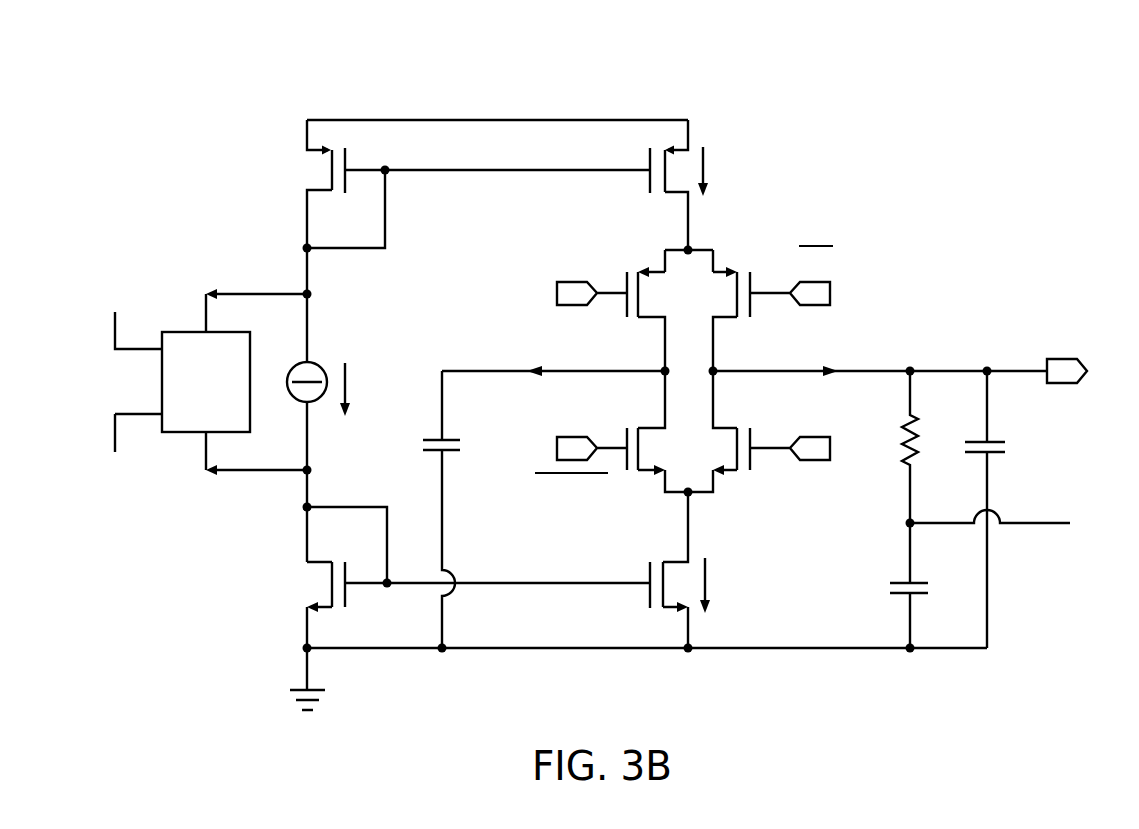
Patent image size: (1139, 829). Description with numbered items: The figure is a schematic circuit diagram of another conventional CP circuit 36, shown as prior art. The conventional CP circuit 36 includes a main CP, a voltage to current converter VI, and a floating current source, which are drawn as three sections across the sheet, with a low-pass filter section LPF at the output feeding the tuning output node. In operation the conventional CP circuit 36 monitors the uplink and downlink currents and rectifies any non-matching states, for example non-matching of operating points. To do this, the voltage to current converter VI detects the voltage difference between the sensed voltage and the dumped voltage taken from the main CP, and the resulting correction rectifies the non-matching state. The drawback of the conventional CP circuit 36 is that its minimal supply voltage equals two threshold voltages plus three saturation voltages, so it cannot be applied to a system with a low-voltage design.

The conventional CP circuit 36 is at (998, 129).
The voltage to current converter VI is at (276, 677).
The main CP is at (794, 677).
The low-pass filter section LPF is at (1019, 677).